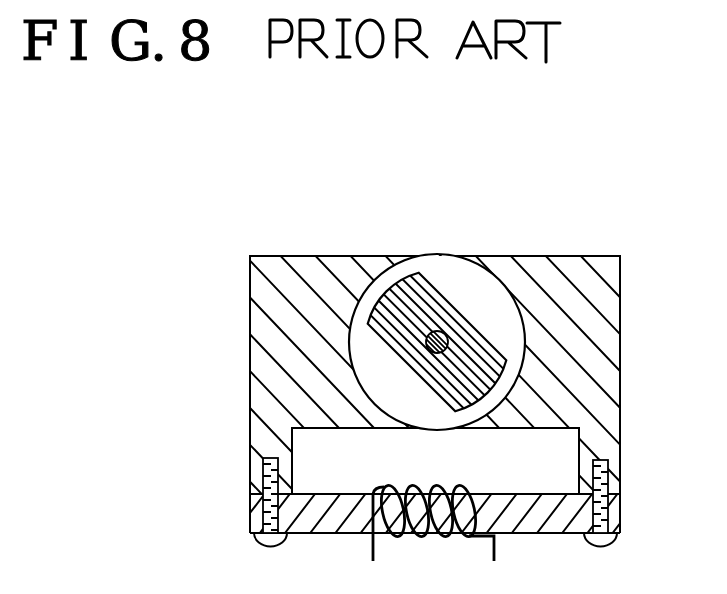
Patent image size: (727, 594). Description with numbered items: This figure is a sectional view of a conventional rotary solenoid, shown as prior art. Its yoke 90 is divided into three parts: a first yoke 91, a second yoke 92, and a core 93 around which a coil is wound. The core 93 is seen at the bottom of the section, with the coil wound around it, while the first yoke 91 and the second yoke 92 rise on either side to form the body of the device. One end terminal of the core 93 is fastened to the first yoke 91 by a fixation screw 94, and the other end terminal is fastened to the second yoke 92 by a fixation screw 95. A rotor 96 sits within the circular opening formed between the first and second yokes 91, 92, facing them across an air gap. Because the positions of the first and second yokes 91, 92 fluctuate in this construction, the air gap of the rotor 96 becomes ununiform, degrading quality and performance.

The yoke 90 is at (631, 214).
The first yoke 91 is at (611, 349).
The second yoke 92 is at (258, 363).
The core 93 is at (533, 534).
The fixation screw 94 is at (608, 488).
The fixation screw 95 is at (258, 503).
The rotor 96 is at (444, 286).